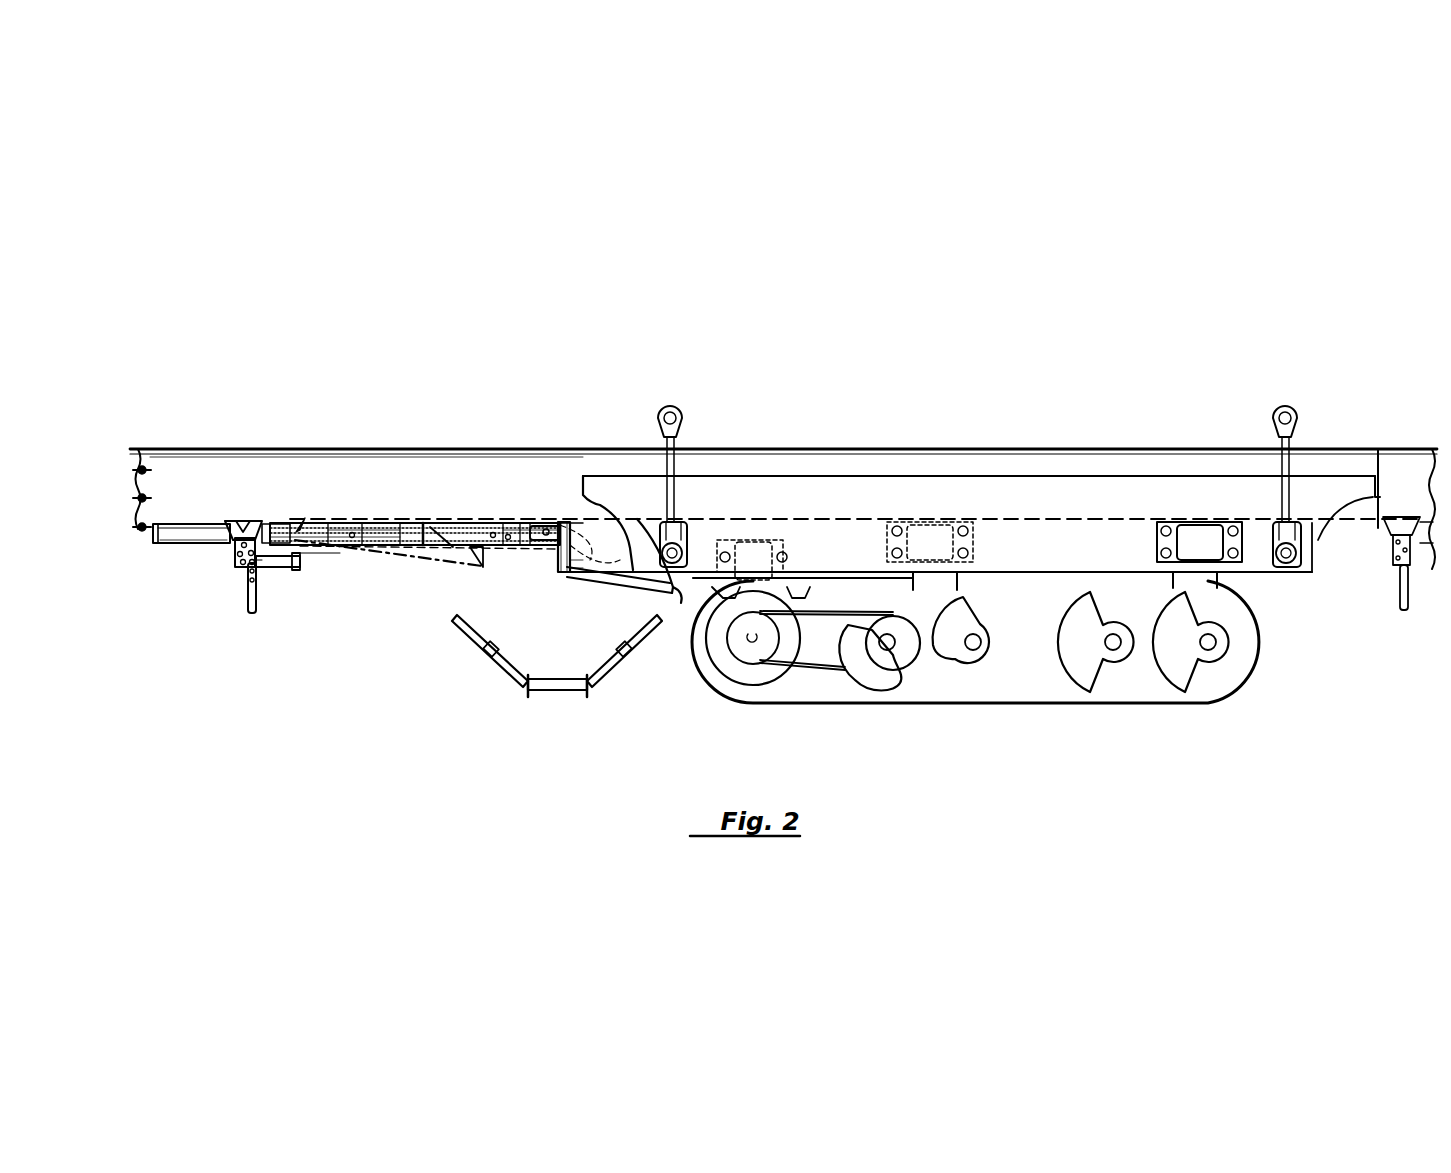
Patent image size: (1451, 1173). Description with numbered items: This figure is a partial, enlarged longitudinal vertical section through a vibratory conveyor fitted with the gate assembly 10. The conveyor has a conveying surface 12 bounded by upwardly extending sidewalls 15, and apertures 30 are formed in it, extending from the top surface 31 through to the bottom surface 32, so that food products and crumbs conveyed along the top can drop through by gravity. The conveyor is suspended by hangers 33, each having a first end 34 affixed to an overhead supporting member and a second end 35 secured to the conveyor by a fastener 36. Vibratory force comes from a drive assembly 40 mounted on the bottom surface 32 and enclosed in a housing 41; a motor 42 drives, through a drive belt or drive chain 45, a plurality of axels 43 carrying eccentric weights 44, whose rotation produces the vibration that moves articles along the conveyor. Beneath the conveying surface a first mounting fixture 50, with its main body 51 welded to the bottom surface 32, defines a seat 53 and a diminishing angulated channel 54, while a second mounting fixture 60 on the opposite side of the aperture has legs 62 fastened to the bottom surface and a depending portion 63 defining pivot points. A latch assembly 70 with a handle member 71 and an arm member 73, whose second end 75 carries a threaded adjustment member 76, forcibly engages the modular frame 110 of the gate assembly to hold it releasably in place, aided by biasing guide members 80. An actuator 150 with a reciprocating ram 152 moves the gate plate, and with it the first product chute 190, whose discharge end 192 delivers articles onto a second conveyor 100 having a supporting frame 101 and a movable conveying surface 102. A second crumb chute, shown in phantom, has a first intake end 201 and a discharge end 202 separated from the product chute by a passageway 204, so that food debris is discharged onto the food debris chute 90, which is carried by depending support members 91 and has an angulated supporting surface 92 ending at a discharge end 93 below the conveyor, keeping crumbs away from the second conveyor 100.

The gate assembly 10 is at (406, 522).
The conveying surface 12 is at (156, 518).
The sidewalls 15 is at (266, 485).
The apertures 30 is at (458, 522).
The top surface 31 is at (176, 522).
The bottom surface 32 is at (153, 531).
The hangers 33 is at (678, 471).
The first end 34 is at (662, 412).
The second end 35 is at (690, 527).
The fastener 36 is at (684, 562).
The drive assembly 40 is at (1013, 679).
The housing 41 is at (1252, 680).
The motor 42 is at (752, 672).
The axels 43 is at (1096, 630).
The eccentric weights 44 is at (858, 675).
The drive belt or drive chain 45 is at (817, 670).
The first mounting fixture 50 is at (550, 520).
The main body 51 is at (563, 545).
The seat 53 is at (543, 527).
The channel 54 is at (560, 573).
The second mounting fixture 60 is at (232, 551).
The legs 62 is at (249, 515).
The depending portion 63 is at (239, 555).
The latch assembly 70 is at (262, 586).
The handle member 71 is at (250, 616).
The arm member 73 is at (285, 568).
The second end 75 is at (312, 557).
The threaded adjustment member 76 is at (302, 561).
The biasing guide members 80 is at (304, 516).
The food debris chute 90 is at (579, 582).
The depending support members 91 is at (592, 582).
The angulated supporting surface 92 is at (640, 545).
The discharge end 93 is at (678, 602).
The second conveyor 100 is at (565, 683).
The supporting frame 101 is at (627, 669).
The conveying surface 102 is at (535, 675).
The modular frame 110 is at (523, 520).
The actuator 150 is at (174, 538).
The ram 152 is at (366, 520).
The first product chute 190 is at (445, 521).
The second or discharge end 192 is at (602, 501).
The first intake end 201 is at (493, 577).
The second or discharge end 202 is at (558, 562).
The passageway 204 is at (562, 602).